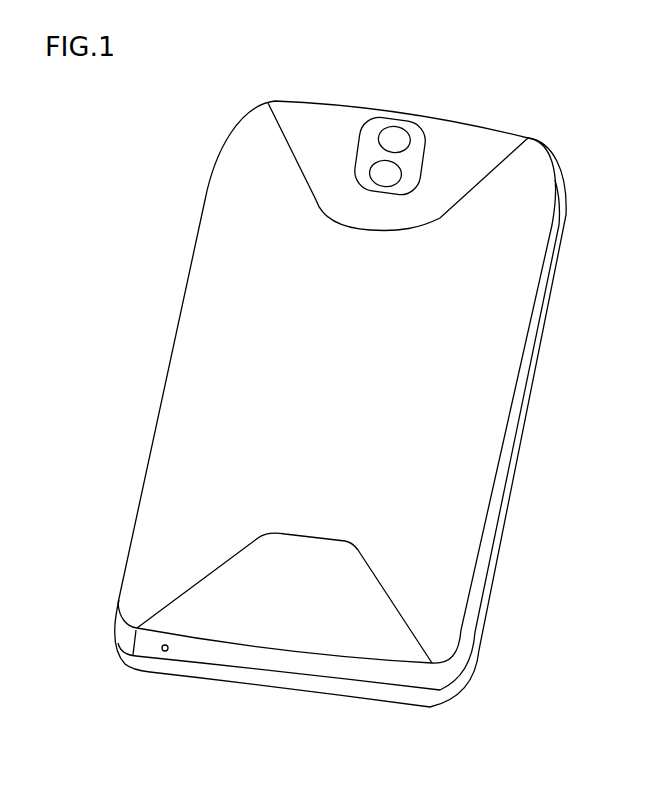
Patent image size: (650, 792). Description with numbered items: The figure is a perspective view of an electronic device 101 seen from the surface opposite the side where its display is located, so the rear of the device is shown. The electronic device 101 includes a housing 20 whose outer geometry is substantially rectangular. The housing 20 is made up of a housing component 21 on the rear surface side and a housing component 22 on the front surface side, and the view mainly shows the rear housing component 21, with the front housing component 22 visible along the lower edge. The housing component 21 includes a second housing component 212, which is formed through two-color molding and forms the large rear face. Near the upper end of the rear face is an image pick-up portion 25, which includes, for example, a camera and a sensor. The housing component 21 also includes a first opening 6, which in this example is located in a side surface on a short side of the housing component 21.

The electronic device 101 is at (184, 101).
The second housing component 212 is at (185, 432).
The image pick-up portion 25 is at (397, 120).
The housing 20 is at (522, 643).
The housing component 21 is at (457, 655).
The housing component 22 is at (452, 692).
The first opening 6 is at (167, 652).